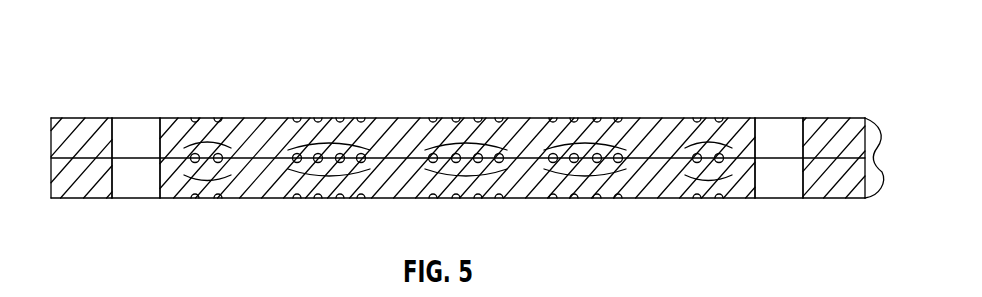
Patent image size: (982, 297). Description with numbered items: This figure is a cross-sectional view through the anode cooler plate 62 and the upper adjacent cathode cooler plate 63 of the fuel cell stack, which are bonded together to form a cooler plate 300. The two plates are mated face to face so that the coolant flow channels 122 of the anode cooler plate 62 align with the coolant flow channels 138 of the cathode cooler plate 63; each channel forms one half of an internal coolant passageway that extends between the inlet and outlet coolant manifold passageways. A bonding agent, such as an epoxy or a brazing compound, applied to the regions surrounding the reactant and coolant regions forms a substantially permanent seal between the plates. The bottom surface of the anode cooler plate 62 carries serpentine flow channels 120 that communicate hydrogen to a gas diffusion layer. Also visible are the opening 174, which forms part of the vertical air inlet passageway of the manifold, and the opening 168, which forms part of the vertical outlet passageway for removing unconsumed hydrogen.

The anode cooler plate 62 is at (44, 182).
The cathode cooler plate 63 is at (44, 130).
The serpentine flow channels 120 is at (705, 145).
The coolant flow channels 122 is at (208, 177).
The coolant flow channels 138 is at (215, 145).
The opening 168 is at (785, 198).
The opening 174 is at (116, 201).
The cooler plate 300 is at (882, 160).